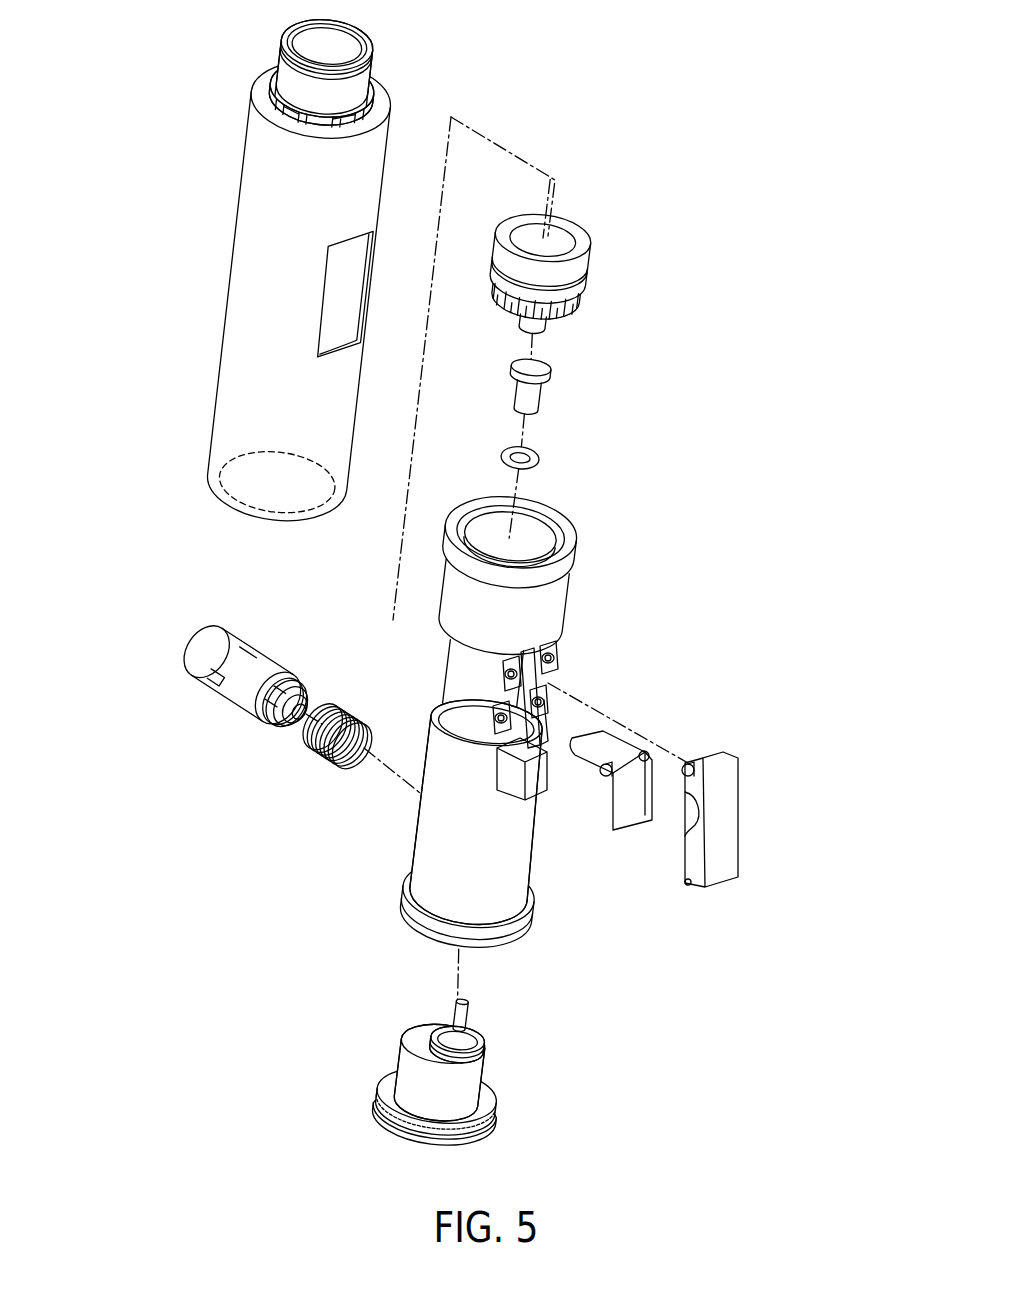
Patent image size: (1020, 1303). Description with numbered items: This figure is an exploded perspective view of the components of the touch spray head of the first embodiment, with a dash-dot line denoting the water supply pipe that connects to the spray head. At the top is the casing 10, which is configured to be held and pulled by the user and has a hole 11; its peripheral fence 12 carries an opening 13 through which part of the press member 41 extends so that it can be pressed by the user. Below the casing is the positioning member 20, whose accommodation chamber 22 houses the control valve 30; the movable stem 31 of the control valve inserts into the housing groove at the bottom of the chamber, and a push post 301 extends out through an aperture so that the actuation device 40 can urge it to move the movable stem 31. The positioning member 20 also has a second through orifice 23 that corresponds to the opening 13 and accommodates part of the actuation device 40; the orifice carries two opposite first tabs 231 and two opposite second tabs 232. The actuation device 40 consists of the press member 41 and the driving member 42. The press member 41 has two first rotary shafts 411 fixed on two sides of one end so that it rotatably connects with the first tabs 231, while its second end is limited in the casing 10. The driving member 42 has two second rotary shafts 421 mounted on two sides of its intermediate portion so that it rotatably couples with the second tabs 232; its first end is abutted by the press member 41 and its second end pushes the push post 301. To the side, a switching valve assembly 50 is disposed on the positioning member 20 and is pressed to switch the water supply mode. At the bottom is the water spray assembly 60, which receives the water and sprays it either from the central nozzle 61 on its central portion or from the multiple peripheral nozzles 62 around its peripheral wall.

The casing 10 is at (213, 233).
The hole 11 is at (245, 510).
The peripheral fence 12 is at (240, 352).
The opening 13 is at (352, 283).
The positioning member 20 is at (582, 585).
The accommodation chamber 22 is at (530, 535).
The second through orifice 23 is at (560, 680).
The first tabs 231 is at (550, 660).
The second tabs 232 is at (550, 706).
The control valve 30 is at (607, 280).
The movable stem 31 is at (548, 335).
The push post 301 is at (537, 398).
The actuation device 40 is at (661, 892).
The press member 41 is at (725, 845).
The first rotary shafts 411 is at (690, 778).
The driving member 42 is at (635, 826).
The second rotary shafts 421 is at (652, 750).
The switching valve assembly 50 is at (238, 732).
The water spray assembly 60 is at (503, 1029).
The central nozzle 61 is at (470, 1025).
The peripheral nozzles 62 is at (395, 1085).